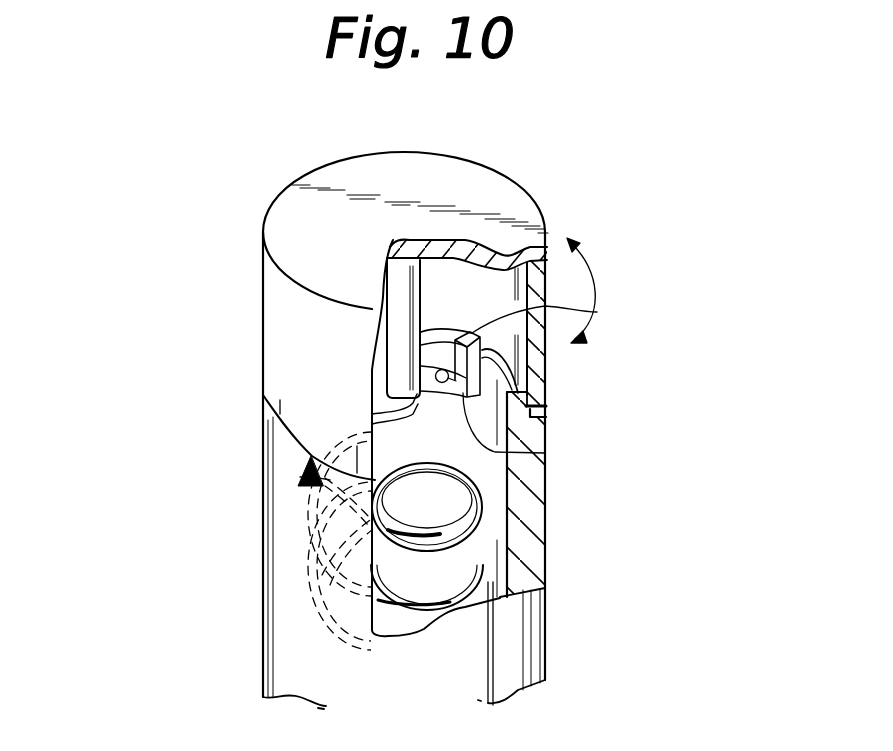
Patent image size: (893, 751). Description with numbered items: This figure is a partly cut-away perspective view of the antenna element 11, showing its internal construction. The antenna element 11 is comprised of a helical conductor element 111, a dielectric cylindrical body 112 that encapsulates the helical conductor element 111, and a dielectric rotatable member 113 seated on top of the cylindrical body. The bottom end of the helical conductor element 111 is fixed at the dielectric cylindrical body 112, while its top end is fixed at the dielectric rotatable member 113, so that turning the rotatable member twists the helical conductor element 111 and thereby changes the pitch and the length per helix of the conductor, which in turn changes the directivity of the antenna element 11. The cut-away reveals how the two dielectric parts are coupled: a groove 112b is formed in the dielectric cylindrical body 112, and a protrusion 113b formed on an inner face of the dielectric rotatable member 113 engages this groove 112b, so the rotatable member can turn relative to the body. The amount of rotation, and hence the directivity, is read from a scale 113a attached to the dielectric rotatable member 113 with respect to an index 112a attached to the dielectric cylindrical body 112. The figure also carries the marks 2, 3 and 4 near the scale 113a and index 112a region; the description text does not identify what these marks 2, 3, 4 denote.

The antenna element 11 is at (682, 149).
The dielectric rotatable member 113 is at (547, 376).
The scale 113a is at (263, 395).
The protrusion 113b is at (597, 312).
The dielectric cylindrical body 112 is at (545, 492).
The index 112a is at (300, 477).
The groove 112b is at (545, 453).
The helical conductor element 111 is at (478, 520).
The gap 2 is at (281, 389).
The alignment mark 3 is at (312, 456).
The alignment mark 4 is at (358, 442).